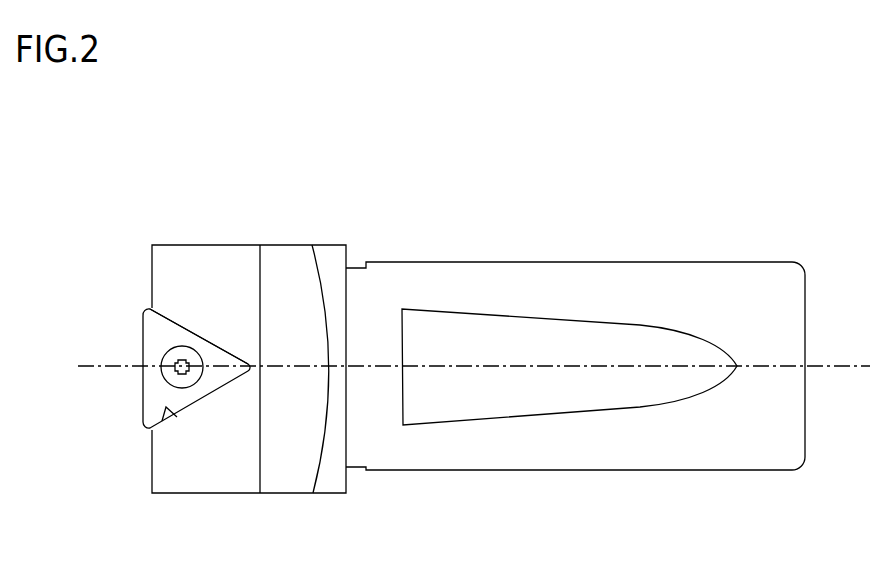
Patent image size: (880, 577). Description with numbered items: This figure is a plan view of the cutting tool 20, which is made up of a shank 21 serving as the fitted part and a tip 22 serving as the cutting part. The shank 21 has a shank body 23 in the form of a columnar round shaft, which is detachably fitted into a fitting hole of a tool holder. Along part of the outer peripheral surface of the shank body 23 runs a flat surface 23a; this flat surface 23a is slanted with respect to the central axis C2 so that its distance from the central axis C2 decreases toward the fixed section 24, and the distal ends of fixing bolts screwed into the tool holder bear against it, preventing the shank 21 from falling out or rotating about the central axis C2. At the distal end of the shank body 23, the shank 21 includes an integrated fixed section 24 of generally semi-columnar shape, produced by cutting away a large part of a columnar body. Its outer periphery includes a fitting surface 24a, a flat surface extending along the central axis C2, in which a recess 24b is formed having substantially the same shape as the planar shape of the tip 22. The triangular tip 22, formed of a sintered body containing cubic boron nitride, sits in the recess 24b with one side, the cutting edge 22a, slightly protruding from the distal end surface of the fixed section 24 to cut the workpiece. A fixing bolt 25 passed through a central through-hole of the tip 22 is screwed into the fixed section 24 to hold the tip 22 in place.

The cutting tool 20 is at (280, 207).
The shank 21 is at (403, 247).
The tip 22 is at (173, 332).
The cutting edge 22a is at (140, 340).
The shank body 23 is at (522, 263).
The flat surface 23a is at (582, 345).
The fixed section 24 is at (223, 245).
The fitting surface 24a is at (242, 475).
The recess 24b is at (163, 412).
The fixing bolt 25 is at (162, 383).
The central axis C2 is at (838, 366).